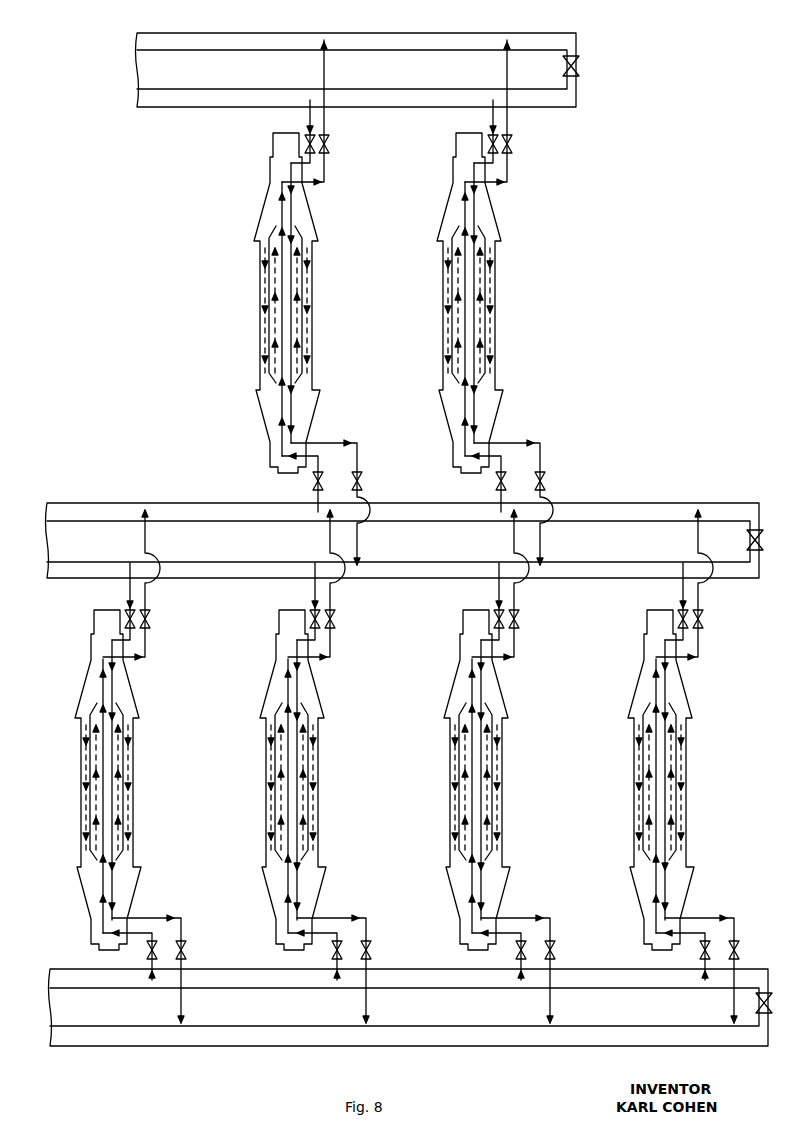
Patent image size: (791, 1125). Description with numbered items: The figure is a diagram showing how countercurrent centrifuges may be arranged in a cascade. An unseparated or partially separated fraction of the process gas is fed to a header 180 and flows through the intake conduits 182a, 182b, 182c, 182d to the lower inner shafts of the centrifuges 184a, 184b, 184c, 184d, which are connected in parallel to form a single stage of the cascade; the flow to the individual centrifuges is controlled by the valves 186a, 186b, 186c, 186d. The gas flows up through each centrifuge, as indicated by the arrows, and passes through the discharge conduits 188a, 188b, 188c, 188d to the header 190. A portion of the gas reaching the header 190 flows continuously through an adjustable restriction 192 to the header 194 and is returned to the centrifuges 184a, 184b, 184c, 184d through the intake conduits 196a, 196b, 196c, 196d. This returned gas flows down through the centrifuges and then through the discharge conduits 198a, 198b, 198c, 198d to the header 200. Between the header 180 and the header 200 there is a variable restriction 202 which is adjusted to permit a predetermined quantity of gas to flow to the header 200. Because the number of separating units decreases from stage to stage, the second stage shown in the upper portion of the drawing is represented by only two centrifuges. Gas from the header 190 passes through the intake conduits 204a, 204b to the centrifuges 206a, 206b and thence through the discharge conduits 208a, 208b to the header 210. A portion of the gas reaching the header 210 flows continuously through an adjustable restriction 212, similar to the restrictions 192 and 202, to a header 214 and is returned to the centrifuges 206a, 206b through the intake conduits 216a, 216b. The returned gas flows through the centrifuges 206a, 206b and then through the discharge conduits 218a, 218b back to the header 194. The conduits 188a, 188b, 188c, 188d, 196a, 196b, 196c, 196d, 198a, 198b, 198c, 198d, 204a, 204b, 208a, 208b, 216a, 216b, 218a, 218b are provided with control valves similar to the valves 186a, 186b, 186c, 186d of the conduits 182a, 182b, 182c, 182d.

The header 210 is at (388, 34).
The header 214 is at (375, 92).
The adjustable restriction 212 is at (583, 72).
The centrifuge 206a is at (316, 306).
The centrifuge 206b is at (500, 298).
The intake conduit 216a is at (305, 114).
The intake conduit 216b is at (490, 114).
The discharge conduit 208a is at (329, 176).
The discharge conduit 208b is at (512, 176).
The discharge conduit 218a is at (359, 458).
The discharge conduit 218b is at (543, 458).
The intake conduit 204a is at (317, 496).
The intake conduit 204b is at (503, 497).
The header 190 is at (183, 513).
The header 194 is at (241, 562).
The adjustable restriction 192 is at (748, 528).
The centrifuge 184a is at (135, 826).
The centrifuge 184b is at (320, 818).
The centrifuge 184c is at (504, 808).
The centrifuge 184d is at (688, 795).
The intake conduit 196a is at (128, 590).
The intake conduit 196b is at (312, 584).
The intake conduit 196c is at (497, 583).
The intake conduit 196d is at (680, 582).
The discharge conduit 188a is at (152, 652).
The discharge conduit 188b is at (335, 652).
The discharge conduit 188c is at (518, 652).
The discharge conduit 188d is at (702, 648).
The valve 186a is at (152, 942).
The valve 186b is at (360, 920).
The valve 186c is at (545, 921).
The valve 186d is at (710, 936).
The discharge conduit 198a is at (183, 967).
The discharge conduit 198b is at (369, 965).
The discharge conduit 198c is at (553, 965).
The discharge conduit 198d is at (738, 962).
The intake conduit 182a is at (150, 963).
The intake conduit 182b is at (334, 963).
The intake conduit 182c is at (518, 963).
The intake conduit 182d is at (703, 960).
The header 180 is at (130, 982).
The header 200 is at (224, 1045).
The variable restriction 202 is at (756, 993).